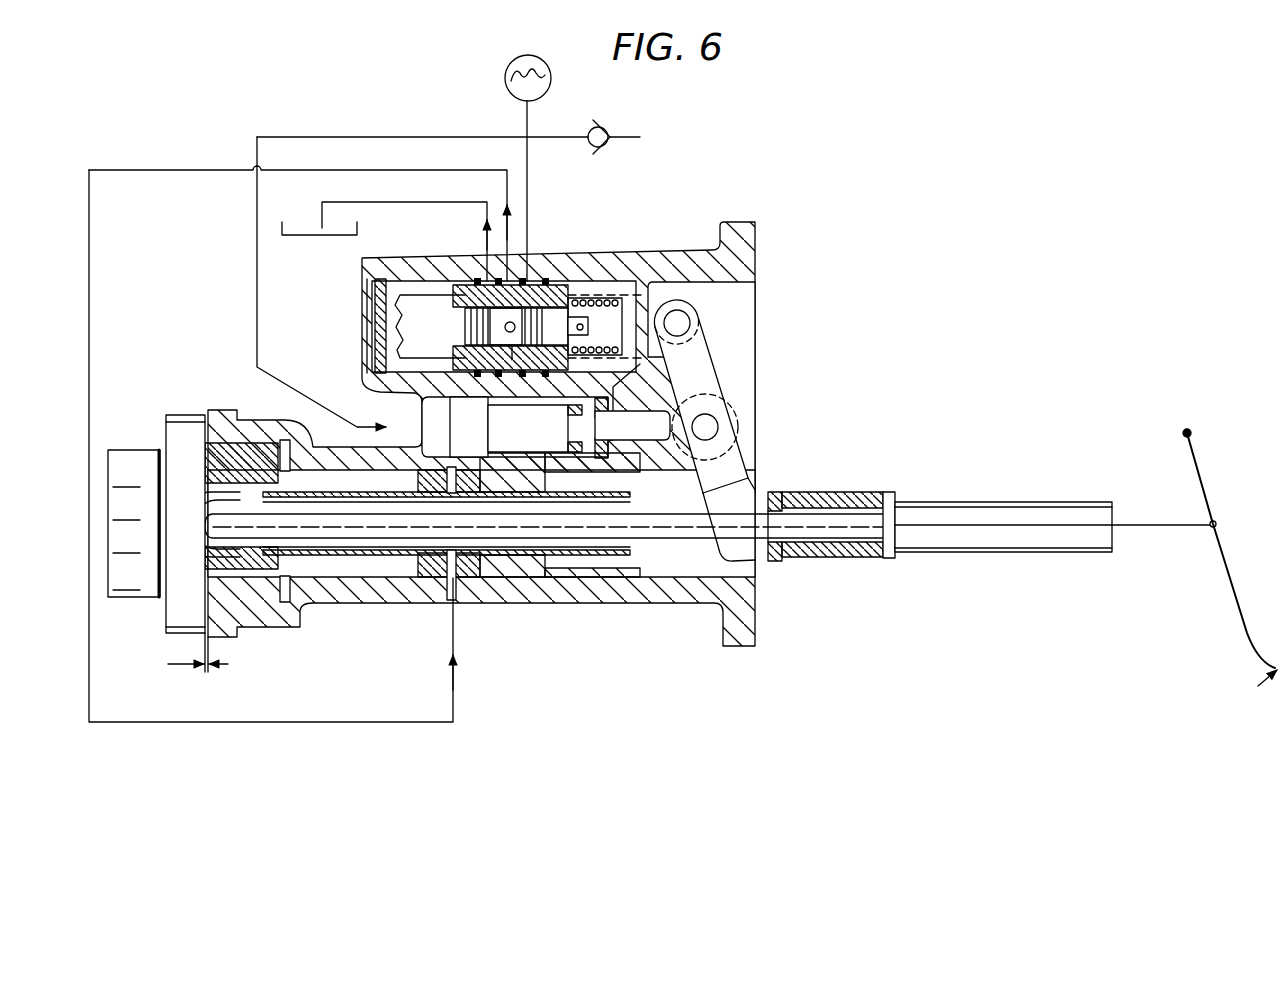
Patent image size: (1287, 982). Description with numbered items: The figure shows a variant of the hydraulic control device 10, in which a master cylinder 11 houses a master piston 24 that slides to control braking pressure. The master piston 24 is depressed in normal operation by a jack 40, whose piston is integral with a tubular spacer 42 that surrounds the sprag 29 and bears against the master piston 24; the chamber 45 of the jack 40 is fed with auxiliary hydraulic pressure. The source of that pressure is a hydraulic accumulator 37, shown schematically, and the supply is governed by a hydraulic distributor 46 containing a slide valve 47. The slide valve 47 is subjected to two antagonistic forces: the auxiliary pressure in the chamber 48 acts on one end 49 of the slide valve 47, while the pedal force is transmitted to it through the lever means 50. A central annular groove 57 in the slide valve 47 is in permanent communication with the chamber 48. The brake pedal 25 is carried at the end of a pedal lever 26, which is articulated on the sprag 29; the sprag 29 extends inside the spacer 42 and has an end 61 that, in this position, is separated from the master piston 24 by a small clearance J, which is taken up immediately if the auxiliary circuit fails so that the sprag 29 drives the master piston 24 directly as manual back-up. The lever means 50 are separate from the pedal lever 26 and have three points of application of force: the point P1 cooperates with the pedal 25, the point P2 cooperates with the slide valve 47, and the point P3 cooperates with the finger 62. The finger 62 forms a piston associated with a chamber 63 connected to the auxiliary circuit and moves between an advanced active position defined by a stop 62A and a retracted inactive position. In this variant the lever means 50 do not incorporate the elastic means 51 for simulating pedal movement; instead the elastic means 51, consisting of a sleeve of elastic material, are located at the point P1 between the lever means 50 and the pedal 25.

The hydraulic control device 10 is at (708, 212).
The master cylinder 11 is at (134, 433).
The master piston 24 is at (250, 478).
The brake pedal 25 is at (1252, 685).
The pedal lever 26 is at (1237, 590).
The sprag 29 is at (674, 527).
The hydraulic accumulator 37 is at (504, 70).
The jack 40 is at (440, 597).
The tubular spacer 42 is at (368, 556).
The chamber of the jack 45 is at (456, 588).
The hydraulic distributor 46 is at (552, 278).
The slide valve 47 is at (443, 315).
The chamber of the distributor 48 is at (603, 298).
The end of the slide valve 49 is at (590, 332).
The means for transmitting force 50 is at (704, 382).
The elastic means for simulating the pedal movement 51 is at (849, 497).
The central annular groove 57 is at (512, 360).
The end of the sprag 61 is at (224, 520).
The finger 62 is at (658, 448).
The stop 62A is at (612, 460).
The chamber 63 is at (450, 410).
The clearance J is at (198, 652).
The point for the application of force P1 is at (768, 562).
The point for the application of force P2 is at (683, 323).
The point for the application of force P3 is at (712, 428).